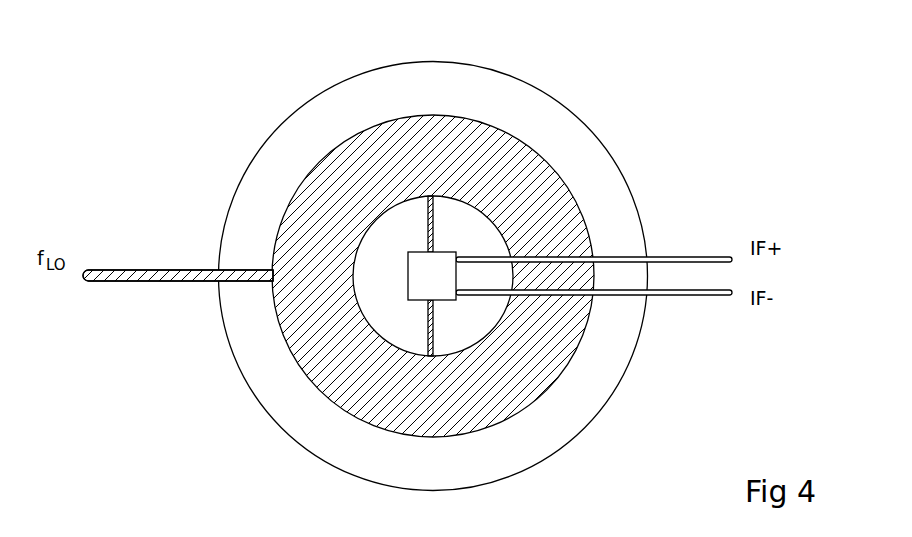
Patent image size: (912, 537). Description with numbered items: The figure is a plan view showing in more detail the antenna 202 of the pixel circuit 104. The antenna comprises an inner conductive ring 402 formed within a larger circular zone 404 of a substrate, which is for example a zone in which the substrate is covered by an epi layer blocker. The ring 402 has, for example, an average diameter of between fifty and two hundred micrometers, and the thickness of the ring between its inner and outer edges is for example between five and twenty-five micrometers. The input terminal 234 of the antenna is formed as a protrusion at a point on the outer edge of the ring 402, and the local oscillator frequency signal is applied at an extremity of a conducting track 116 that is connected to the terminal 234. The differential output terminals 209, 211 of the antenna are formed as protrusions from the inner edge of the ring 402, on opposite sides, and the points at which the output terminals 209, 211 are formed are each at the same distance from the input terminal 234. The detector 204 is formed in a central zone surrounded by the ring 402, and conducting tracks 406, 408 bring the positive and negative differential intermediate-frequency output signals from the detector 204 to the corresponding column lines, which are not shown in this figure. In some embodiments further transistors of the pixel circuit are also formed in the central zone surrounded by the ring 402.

The pixel circuit 104 is at (410, 251).
The antenna 202 is at (436, 255).
The circular zone 404 is at (425, 82).
The inner conductive ring 402 is at (522, 172).
The conducting track 116 is at (124, 270).
The input terminal 234 is at (270, 270).
The detector 204 is at (423, 275).
The differential output terminal 209 is at (428, 196).
The differential output terminal 211 is at (433, 355).
The conducting track 406 is at (690, 258).
The conducting track 408 is at (678, 295).